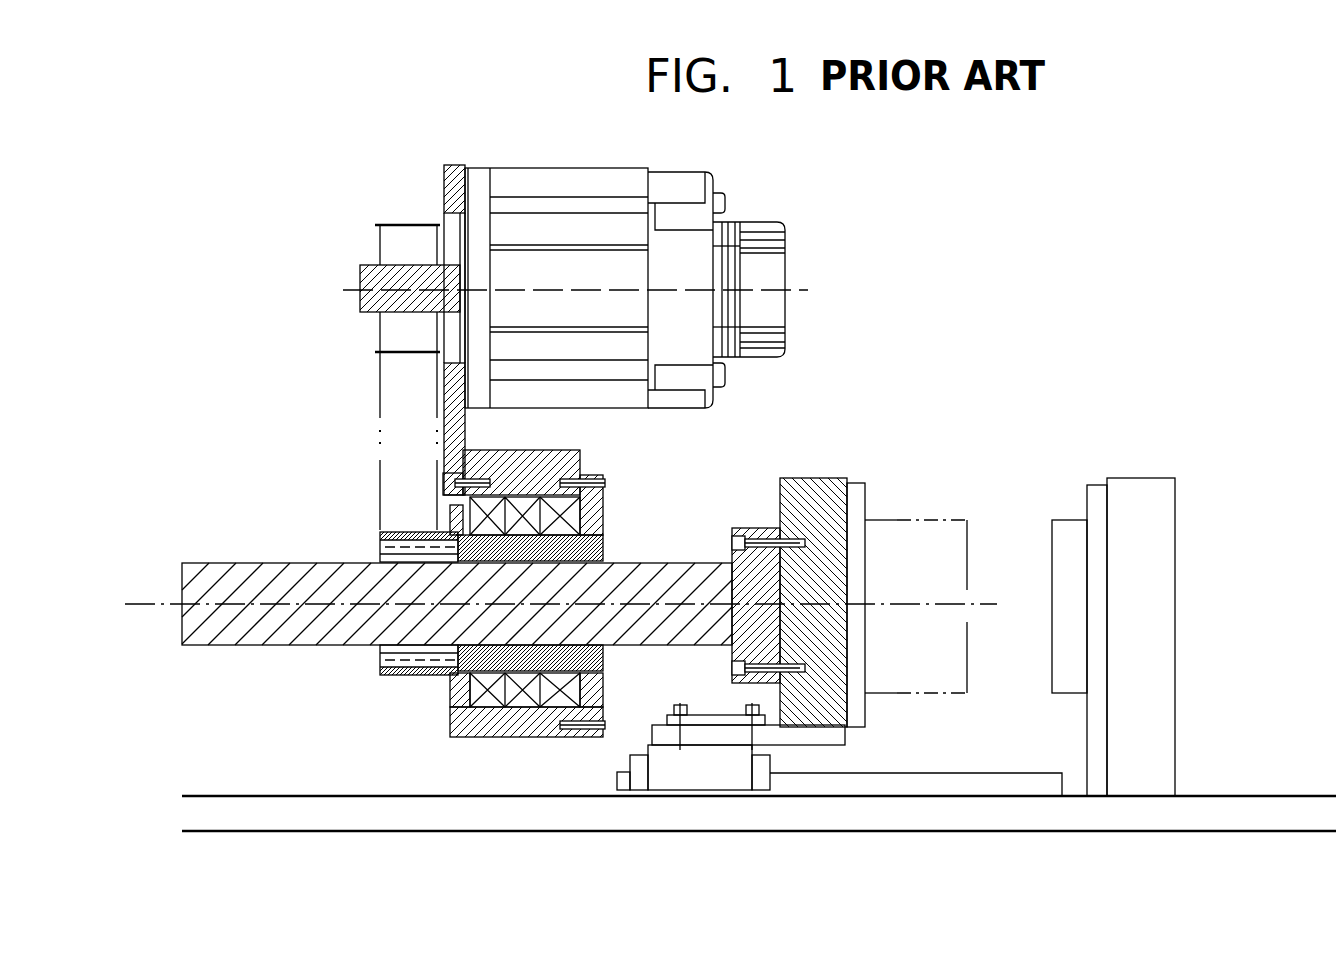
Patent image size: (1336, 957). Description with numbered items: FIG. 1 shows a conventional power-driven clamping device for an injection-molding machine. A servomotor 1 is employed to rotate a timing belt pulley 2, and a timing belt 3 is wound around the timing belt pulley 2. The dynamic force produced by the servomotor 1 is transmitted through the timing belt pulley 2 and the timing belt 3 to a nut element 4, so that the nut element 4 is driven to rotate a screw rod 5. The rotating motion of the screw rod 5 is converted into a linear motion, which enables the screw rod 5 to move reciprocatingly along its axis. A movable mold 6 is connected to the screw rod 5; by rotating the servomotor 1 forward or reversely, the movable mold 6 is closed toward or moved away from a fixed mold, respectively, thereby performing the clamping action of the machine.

The servomotor 1 is at (623, 180).
The timing belt pulley 2 is at (392, 248).
The timing belt 3 is at (392, 410).
The nut element 4 is at (607, 548).
The screw rod 5 is at (297, 575).
The movable mold 6 is at (908, 535).